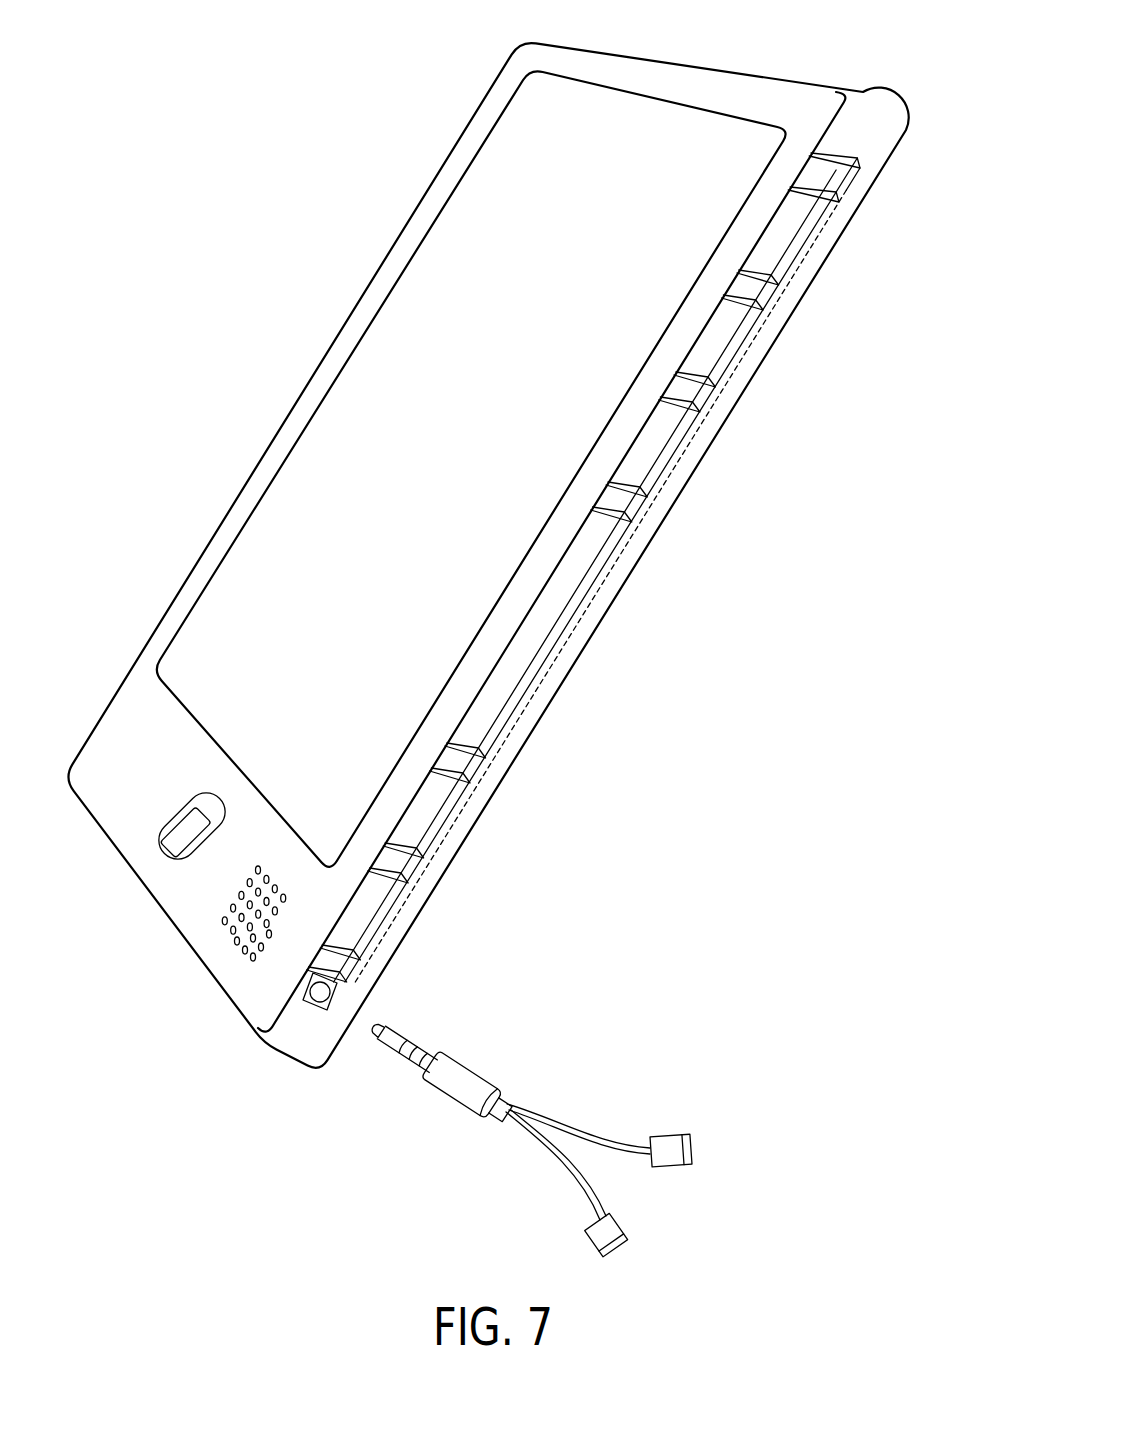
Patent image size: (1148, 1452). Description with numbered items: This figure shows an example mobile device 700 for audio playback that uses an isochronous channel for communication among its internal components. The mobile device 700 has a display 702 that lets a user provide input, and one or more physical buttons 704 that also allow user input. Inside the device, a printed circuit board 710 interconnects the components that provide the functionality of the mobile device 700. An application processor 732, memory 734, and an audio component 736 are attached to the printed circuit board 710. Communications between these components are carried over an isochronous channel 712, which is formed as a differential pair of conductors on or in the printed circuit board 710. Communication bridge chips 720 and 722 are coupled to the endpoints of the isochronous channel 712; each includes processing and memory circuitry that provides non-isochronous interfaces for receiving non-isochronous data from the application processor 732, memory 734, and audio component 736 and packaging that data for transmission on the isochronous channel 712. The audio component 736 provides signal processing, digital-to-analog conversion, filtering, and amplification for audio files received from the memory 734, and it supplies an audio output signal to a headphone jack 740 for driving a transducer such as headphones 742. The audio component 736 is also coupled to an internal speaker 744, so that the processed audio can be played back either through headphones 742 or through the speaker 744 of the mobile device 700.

The mobile device 700 is at (747, 73).
The display 702 is at (627, 90).
The physical button 704 is at (177, 867).
The printed circuit board 710 is at (860, 180).
The isochronous channel 712 is at (586, 612).
The communication bridge chip 720 is at (375, 923).
The communication bridge chip 722 is at (807, 222).
The application processor 732 is at (737, 340).
The memory 734 is at (685, 455).
The audio component 736 is at (447, 800).
The headphone jack 740 is at (317, 1008).
The headphones 742 is at (456, 1096).
The internal speaker 744 is at (233, 943).